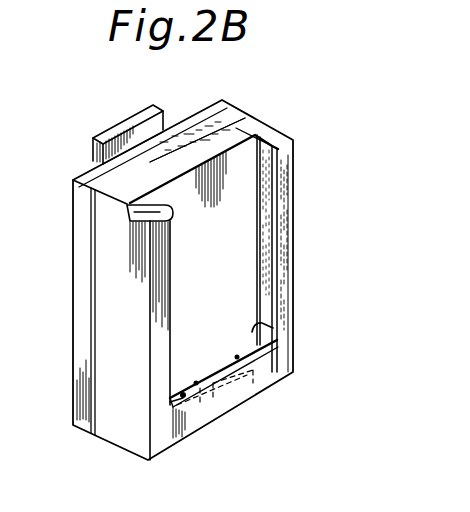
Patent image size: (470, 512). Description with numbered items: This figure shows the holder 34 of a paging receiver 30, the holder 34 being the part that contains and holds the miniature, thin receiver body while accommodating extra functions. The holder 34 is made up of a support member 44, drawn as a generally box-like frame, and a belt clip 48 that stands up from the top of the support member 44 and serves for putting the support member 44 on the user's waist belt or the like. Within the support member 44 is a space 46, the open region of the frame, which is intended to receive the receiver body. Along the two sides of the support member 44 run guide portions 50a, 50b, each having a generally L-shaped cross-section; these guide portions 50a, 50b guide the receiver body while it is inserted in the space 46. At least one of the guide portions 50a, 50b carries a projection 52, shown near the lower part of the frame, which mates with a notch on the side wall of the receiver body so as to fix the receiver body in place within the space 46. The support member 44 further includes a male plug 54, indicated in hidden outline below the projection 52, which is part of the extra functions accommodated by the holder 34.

The paging receiver 30 is at (325, 113).
The holder 34 is at (296, 214).
The support member 44 is at (102, 262).
The space 46 is at (217, 207).
The belt clip 48 is at (97, 141).
The guide portion 50a is at (170, 272).
The guide portion 50b is at (268, 273).
The projection 52 is at (249, 366).
The plug 54 is at (203, 400).